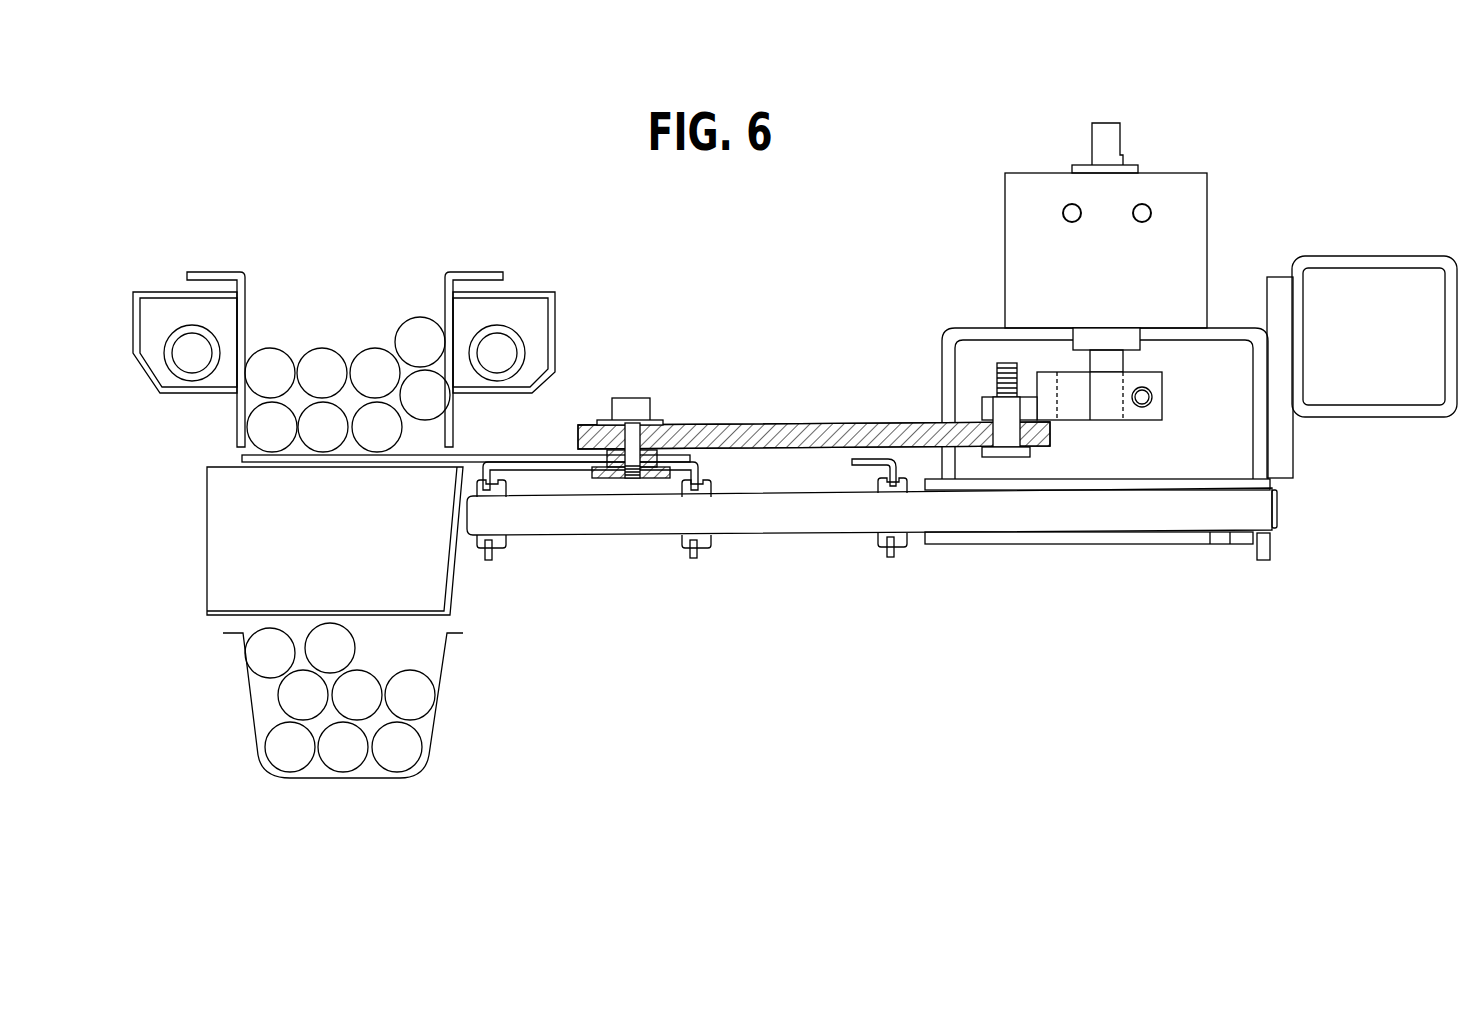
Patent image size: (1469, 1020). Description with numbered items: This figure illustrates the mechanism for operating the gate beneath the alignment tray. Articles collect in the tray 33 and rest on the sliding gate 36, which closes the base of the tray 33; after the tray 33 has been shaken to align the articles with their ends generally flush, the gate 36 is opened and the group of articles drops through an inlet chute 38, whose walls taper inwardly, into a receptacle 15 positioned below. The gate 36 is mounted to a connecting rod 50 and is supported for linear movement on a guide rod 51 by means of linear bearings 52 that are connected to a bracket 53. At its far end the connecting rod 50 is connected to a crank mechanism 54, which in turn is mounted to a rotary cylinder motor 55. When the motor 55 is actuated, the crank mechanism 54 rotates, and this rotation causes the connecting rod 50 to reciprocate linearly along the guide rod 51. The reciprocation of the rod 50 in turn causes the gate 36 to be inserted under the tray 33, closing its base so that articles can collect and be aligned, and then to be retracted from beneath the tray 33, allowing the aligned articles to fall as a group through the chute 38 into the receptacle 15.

The receptacle 15 is at (252, 730).
The tray 33 is at (442, 298).
The sliding gate 36 is at (485, 454).
The inlet chute 38 is at (458, 577).
The connecting rod 50 is at (732, 425).
The guide rod 51 is at (788, 530).
The linear bearings 52 is at (503, 545).
The bracket 53 is at (698, 466).
The crank mechanism 54 is at (1068, 420).
The rotary cylinder motor 55 is at (1187, 197).